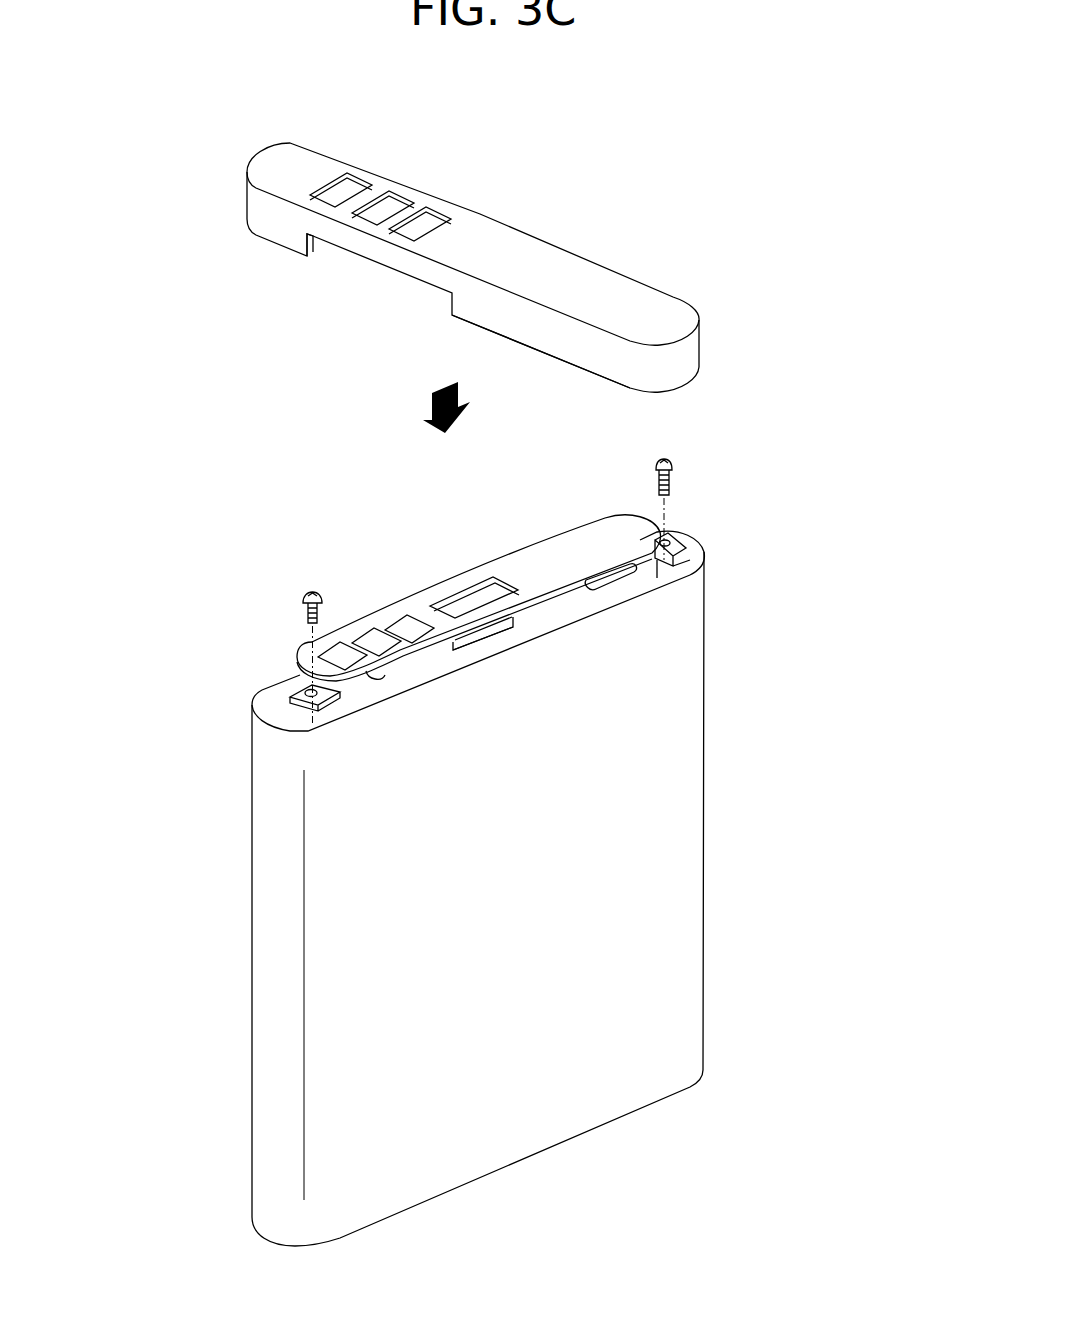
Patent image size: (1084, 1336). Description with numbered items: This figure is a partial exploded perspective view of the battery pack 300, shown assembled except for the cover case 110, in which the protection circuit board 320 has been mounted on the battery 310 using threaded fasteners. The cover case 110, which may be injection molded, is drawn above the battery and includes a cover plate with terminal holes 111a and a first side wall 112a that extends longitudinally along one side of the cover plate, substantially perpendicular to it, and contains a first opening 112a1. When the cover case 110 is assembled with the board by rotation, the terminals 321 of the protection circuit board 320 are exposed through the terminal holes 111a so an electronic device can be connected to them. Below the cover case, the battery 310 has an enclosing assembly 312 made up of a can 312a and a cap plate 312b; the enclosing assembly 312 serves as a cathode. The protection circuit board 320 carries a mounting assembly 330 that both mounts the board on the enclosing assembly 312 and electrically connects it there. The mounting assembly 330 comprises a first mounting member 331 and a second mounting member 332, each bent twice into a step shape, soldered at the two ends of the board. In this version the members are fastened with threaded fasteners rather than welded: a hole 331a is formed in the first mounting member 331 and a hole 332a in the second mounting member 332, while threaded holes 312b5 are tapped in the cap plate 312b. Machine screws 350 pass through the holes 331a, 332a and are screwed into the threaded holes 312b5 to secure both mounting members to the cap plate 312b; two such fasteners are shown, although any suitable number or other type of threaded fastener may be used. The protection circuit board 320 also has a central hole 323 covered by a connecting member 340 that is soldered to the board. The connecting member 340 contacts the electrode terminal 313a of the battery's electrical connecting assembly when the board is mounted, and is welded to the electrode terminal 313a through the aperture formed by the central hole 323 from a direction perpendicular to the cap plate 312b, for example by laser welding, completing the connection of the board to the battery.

The battery pack 300 is at (748, 168).
The cover case 110 is at (473, 274).
The terminal holes 111a is at (420, 217).
The first side wall 112a is at (542, 332).
The first opening 112a1 is at (362, 267).
The battery 310 is at (565, 888).
The enclosing assembly 312 is at (811, 633).
The can 312a is at (665, 750).
The cap plate 312b is at (677, 572).
The threaded holes 312b5 is at (262, 731).
The electrode terminal 313a is at (470, 643).
The protection circuit board 320 is at (479, 580).
The terminals 321 is at (400, 625).
The central hole 323 is at (450, 600).
The mounting assembly 330 is at (472, 632).
The first mounting member 331 is at (321, 707).
The hole 331a is at (292, 690).
The second mounting member 332 is at (660, 592).
The hole 332a is at (664, 547).
The connecting member 340 is at (502, 620).
The machine screws 350 is at (302, 598).